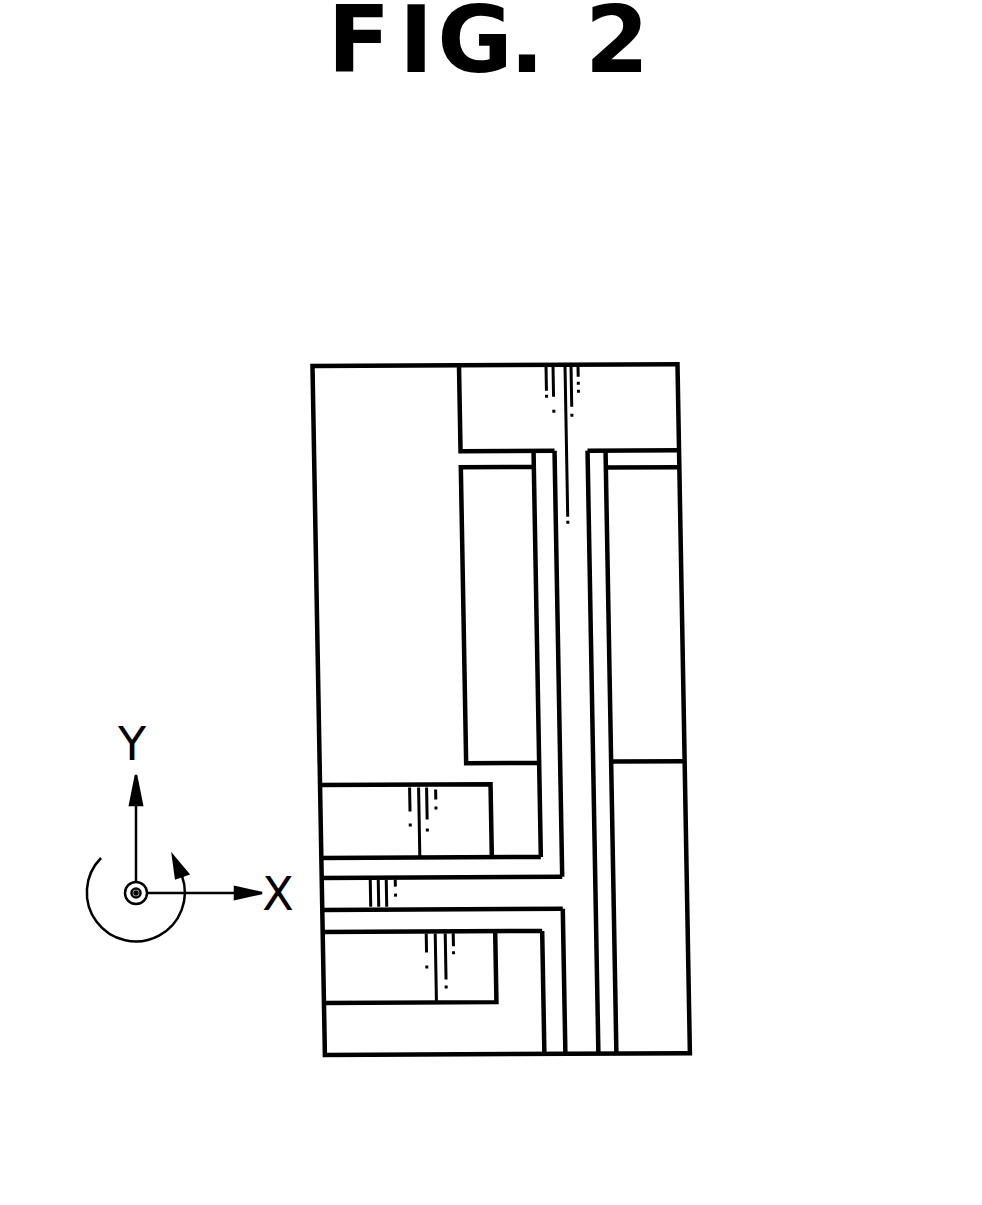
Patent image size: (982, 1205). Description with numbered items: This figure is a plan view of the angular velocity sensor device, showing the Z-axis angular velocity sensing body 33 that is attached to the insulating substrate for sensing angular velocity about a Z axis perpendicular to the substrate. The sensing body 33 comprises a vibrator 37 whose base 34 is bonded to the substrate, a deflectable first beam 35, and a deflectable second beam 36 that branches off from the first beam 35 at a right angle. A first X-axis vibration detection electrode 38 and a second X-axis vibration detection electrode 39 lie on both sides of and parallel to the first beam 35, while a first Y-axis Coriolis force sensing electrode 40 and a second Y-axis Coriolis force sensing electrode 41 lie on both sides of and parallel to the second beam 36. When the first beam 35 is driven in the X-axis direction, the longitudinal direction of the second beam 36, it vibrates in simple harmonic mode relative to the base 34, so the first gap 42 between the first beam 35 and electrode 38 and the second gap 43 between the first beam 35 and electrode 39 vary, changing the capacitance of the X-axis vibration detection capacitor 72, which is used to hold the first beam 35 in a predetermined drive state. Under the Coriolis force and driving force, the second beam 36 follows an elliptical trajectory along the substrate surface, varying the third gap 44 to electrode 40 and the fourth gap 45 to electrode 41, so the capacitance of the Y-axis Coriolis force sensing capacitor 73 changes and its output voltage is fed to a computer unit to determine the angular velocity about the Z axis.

The Z-axis angular velocity sensing body 33 is at (698, 608).
The base 34 is at (620, 393).
The first beam 35 is at (583, 843).
The second beam 36 is at (404, 893).
The vibrator 37 is at (577, 692).
The first X-axis vibration detection electrode 38 is at (655, 555).
The second X-axis vibration detection electrode 39 is at (478, 503).
The first Y-axis Coriolis force sensing electrode 40 is at (449, 985).
The second Y-axis Coriolis force sensing electrode 41 is at (385, 800).
The first gap 42 is at (597, 493).
The second gap 43 is at (540, 552).
The third gap 44 is at (335, 922).
The fourth gap 45 is at (365, 865).
The X-axis vibration detection capacitor 72 is at (577, 740).
The Y-axis Coriolis force sensing capacitor 73 is at (504, 893).